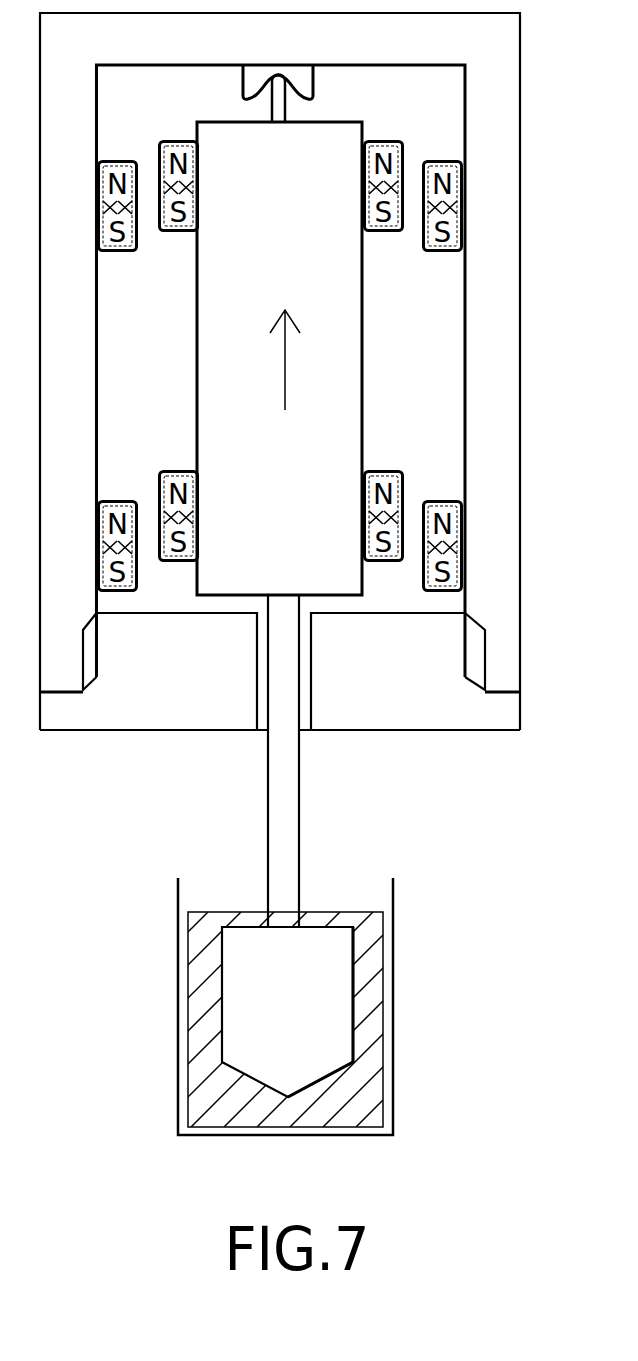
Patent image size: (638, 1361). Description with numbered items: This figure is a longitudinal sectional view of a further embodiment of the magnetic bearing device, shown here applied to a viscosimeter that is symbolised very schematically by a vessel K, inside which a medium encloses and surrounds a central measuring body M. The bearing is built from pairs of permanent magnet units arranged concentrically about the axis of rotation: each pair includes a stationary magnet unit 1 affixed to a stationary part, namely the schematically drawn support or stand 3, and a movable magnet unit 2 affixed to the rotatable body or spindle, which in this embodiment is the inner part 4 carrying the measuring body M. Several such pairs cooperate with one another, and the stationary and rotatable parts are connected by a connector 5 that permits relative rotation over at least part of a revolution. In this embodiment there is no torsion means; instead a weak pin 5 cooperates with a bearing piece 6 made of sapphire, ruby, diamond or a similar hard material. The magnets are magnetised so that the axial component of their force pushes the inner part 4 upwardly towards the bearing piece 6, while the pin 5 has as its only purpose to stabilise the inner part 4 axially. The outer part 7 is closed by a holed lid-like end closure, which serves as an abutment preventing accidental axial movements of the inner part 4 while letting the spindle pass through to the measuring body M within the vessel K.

The stationary magnet unit 1 is at (118, 252).
The movable magnet unit 2 is at (173, 232).
The support or stand 3 is at (520, 343).
The inner part 4 is at (362, 380).
The connector 5 is at (286, 112).
The bearing piece 6 is at (243, 82).
The outer part 7 is at (383, 730).
The vessel K is at (393, 1042).
The central measuring body M is at (275, 1015).